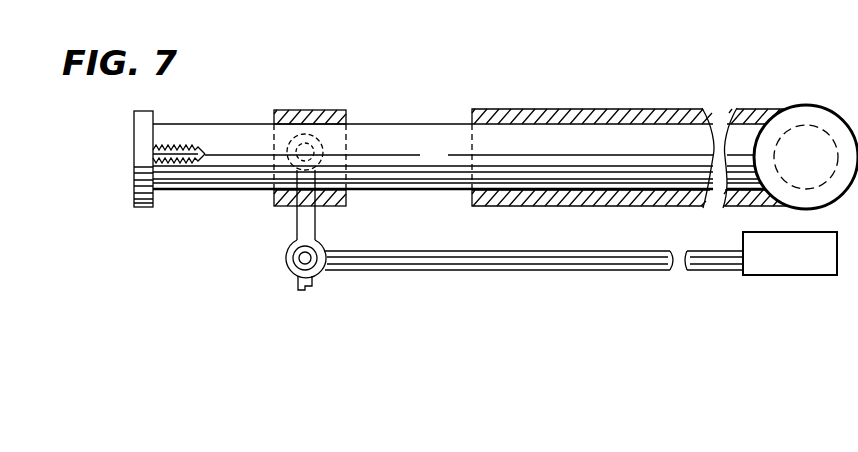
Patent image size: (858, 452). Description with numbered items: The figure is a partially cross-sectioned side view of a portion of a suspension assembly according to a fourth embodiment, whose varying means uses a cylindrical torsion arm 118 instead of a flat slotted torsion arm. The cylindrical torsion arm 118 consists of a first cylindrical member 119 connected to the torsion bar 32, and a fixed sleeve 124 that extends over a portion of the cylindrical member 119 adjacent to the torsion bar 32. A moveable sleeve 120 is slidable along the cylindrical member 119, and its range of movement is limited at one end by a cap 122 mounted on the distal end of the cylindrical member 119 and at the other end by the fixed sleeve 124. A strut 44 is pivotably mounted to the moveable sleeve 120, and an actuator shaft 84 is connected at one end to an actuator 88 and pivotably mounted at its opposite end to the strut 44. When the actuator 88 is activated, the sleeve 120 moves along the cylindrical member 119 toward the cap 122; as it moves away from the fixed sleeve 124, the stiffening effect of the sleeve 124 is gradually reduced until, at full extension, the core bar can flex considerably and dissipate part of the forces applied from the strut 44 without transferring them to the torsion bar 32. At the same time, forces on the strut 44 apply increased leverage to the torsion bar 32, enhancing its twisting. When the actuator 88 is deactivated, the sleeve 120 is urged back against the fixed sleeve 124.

The torsion bar 32 is at (805, 105).
The strut 44 is at (297, 212).
The actuator shaft 84 is at (535, 270).
The actuator 88 is at (760, 275).
The cylindrical torsion arm 118 is at (424, 109).
The first cylindrical member 119 is at (390, 191).
The moveable sleeve 120 is at (313, 110).
The cap 122 is at (134, 157).
The fixed sleeve 124 is at (502, 109).